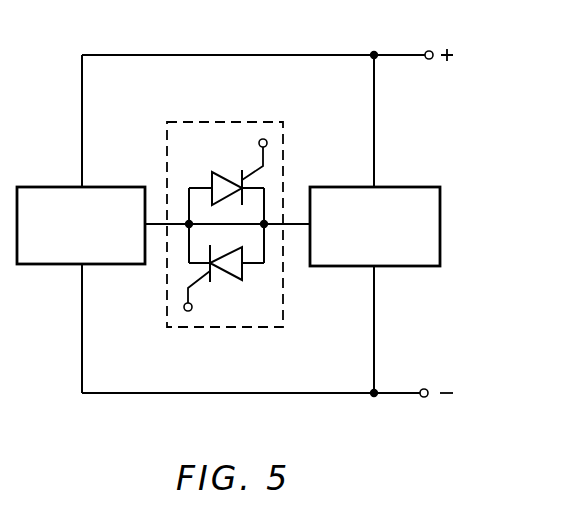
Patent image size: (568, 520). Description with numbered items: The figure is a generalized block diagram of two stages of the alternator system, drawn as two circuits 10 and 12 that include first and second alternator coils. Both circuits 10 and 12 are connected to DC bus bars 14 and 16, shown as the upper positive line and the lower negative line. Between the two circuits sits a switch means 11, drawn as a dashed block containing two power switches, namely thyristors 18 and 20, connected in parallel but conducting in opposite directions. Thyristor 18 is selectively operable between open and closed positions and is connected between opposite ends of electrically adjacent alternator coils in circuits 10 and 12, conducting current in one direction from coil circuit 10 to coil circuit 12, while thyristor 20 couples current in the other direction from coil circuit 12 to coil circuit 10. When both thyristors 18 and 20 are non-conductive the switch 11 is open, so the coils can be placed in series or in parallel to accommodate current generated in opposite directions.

The first stage or circuit 10 is at (94, 233).
The switch means 11 is at (227, 120).
The second stage or circuit 12 is at (386, 233).
The DC bus bar 14 is at (293, 54).
The DC bus bar 16 is at (329, 392).
The thyristor 18 is at (223, 170).
The thyristor 20 is at (226, 282).